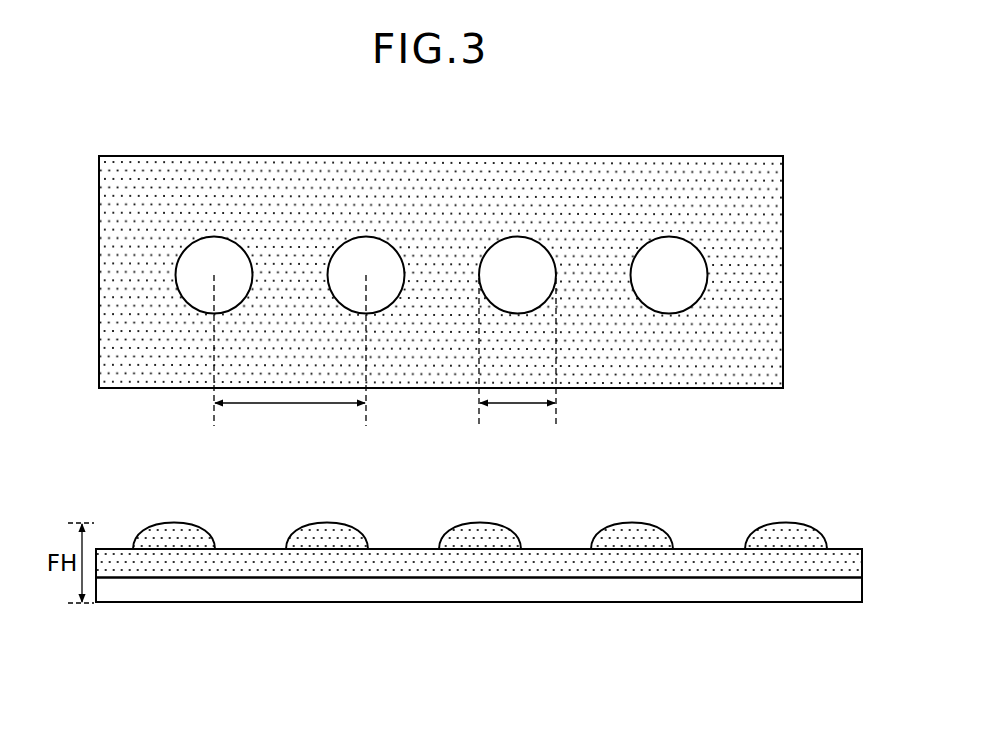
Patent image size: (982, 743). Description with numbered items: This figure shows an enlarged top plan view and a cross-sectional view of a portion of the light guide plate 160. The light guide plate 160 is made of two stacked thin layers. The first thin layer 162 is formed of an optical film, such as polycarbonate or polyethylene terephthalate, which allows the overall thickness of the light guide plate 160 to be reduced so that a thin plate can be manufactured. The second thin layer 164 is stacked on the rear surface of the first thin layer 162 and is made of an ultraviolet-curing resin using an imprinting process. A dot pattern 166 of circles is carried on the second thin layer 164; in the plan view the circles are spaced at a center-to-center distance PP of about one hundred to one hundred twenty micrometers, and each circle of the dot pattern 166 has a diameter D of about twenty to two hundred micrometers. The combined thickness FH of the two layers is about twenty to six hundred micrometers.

The light guide plate 160 is at (68, 118).
The first thin layer 162 is at (482, 598).
The second thin layer 164 is at (250, 556).
The dot pattern 166 is at (482, 524).